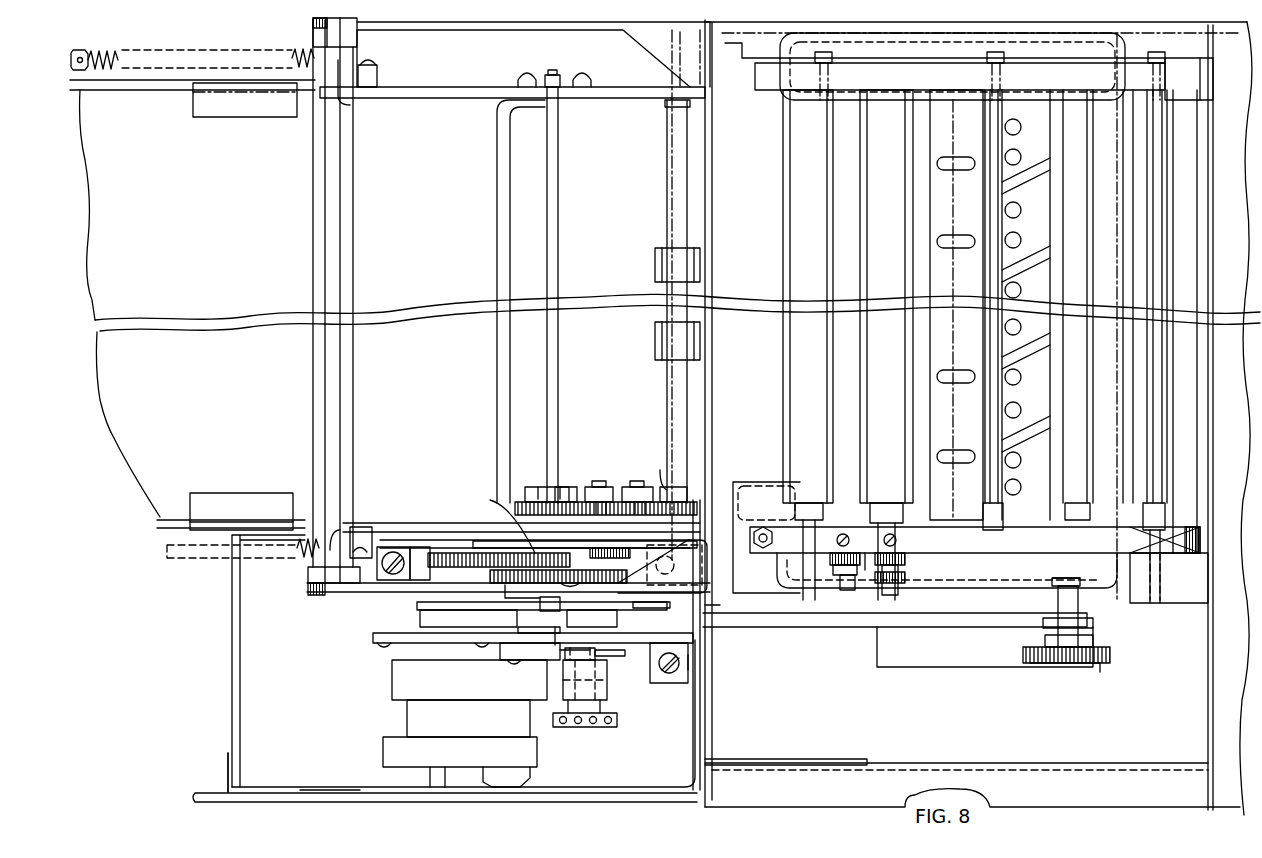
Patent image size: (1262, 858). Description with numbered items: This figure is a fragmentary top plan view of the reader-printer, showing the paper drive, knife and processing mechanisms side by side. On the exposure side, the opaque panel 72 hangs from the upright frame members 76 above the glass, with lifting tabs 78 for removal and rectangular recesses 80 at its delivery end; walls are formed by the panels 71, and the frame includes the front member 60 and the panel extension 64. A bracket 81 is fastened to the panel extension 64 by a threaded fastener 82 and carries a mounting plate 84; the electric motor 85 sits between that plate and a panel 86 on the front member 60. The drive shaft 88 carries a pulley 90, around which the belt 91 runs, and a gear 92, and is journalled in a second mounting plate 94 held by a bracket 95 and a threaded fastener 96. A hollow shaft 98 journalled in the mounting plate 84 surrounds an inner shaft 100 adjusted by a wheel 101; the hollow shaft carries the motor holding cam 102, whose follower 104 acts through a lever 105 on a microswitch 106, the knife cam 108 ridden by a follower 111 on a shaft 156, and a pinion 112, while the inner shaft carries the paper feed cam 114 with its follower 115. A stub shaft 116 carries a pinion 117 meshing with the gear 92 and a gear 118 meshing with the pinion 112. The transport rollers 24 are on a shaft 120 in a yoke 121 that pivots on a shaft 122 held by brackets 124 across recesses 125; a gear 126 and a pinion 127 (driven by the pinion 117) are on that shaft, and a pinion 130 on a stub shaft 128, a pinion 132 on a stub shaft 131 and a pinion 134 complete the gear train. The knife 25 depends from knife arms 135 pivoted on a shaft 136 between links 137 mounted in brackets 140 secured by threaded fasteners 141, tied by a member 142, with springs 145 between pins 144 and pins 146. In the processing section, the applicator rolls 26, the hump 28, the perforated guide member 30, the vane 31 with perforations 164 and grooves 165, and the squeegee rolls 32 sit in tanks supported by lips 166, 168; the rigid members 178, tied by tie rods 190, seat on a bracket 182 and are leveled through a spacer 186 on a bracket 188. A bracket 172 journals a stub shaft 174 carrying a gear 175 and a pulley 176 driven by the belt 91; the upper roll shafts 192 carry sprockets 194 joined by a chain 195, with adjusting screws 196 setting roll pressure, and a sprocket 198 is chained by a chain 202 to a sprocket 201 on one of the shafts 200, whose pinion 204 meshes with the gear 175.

The transport rollers 24 is at (655, 264).
The knife 25 is at (787, 615).
The applicator rolls 26 is at (888, 232).
The hump 28 is at (956, 44).
The guide member 30 is at (992, 114).
The vane 31 is at (1045, 100).
The squeegee rolls 32 is at (1090, 115).
The front member 60 is at (1170, 806).
The panel extension 64 is at (700, 692).
The panels 71 is at (700, 680).
The opaque panel 72 is at (438, 105).
The upright frame members 76 is at (476, 86).
The lifting tabs 78 is at (243, 117).
The recesses 80 is at (663, 248).
The bracket 81 is at (693, 660).
The threaded fastener 82 is at (690, 667).
The mounting plate 84 is at (693, 638).
The electric motor 85 is at (392, 684).
The panel 86 is at (360, 792).
The drive shaft 88 is at (418, 606).
The pulley 90 is at (420, 620).
The belt 91 is at (818, 620).
The gear 92 is at (440, 553).
The second mounting plate 94 is at (427, 540).
The bracket 95 is at (398, 547).
The threaded fastener 96 is at (388, 545).
The hollow shaft 98 is at (607, 680).
The inner shaft 100 is at (603, 706).
The wheel 101 is at (605, 727).
The motor holding cam 102 is at (620, 655).
The follower 104 is at (568, 657).
The lever 105 is at (560, 660).
The microswitch 106 is at (510, 660).
The knife cam 108 is at (630, 622).
The follower 111 is at (540, 603).
The pinion 112 is at (613, 585).
The paper feed cam 114 is at (610, 562).
The follower 115 is at (660, 549).
The stub shaft 116 is at (505, 594).
The pinion 117 is at (493, 550).
The gear 118 is at (490, 578).
The shaft 120 is at (668, 420).
The yoke 121 is at (496, 400).
The shaft 122 is at (563, 213).
The brackets 124 is at (592, 83).
The recesses 125 is at (562, 85).
The gear 126 is at (520, 500).
The pinion 127 is at (490, 500).
The stub shaft 128 is at (600, 484).
The pinion 130 is at (613, 490).
The stub shaft 131 is at (634, 482).
The pinion 132 is at (648, 490).
The pinion 134 is at (673, 468).
The knife arms 135 is at (401, 30).
The shaft 136 is at (313, 23).
The links 137 is at (313, 42).
The brackets 140 is at (378, 78).
The threaded fasteners 141 is at (376, 62).
The member 142 is at (355, 406).
The pin 144 is at (351, 105).
The springs 145 is at (204, 52).
The pins 146 is at (84, 52).
The shaft 156 is at (545, 624).
The perforations 164 is at (1021, 205).
The grooves 165 is at (1035, 256).
The lip 166 is at (752, 100).
The lip 168 is at (1172, 115).
The bracket 172 is at (1002, 668).
The stub shaft 174 is at (1068, 668).
The gear 175 is at (1112, 656).
The pulley 176 is at (1095, 614).
The members 178 is at (1018, 68).
The bracket 182 is at (1190, 586).
The spacer 186 is at (750, 556).
The bracket 188 is at (766, 592).
The tie rods 190 is at (832, 410).
The shafts 192 is at (873, 598).
The sprockets 194 is at (906, 560).
The chain 195 is at (866, 556).
The adjusting screws 196 is at (843, 533).
The sprocket 198 is at (900, 583).
The shafts 200 is at (1105, 75).
The sprocket 201 is at (1072, 573).
The chain 202 is at (980, 576).
The pinion 204 is at (1100, 644).